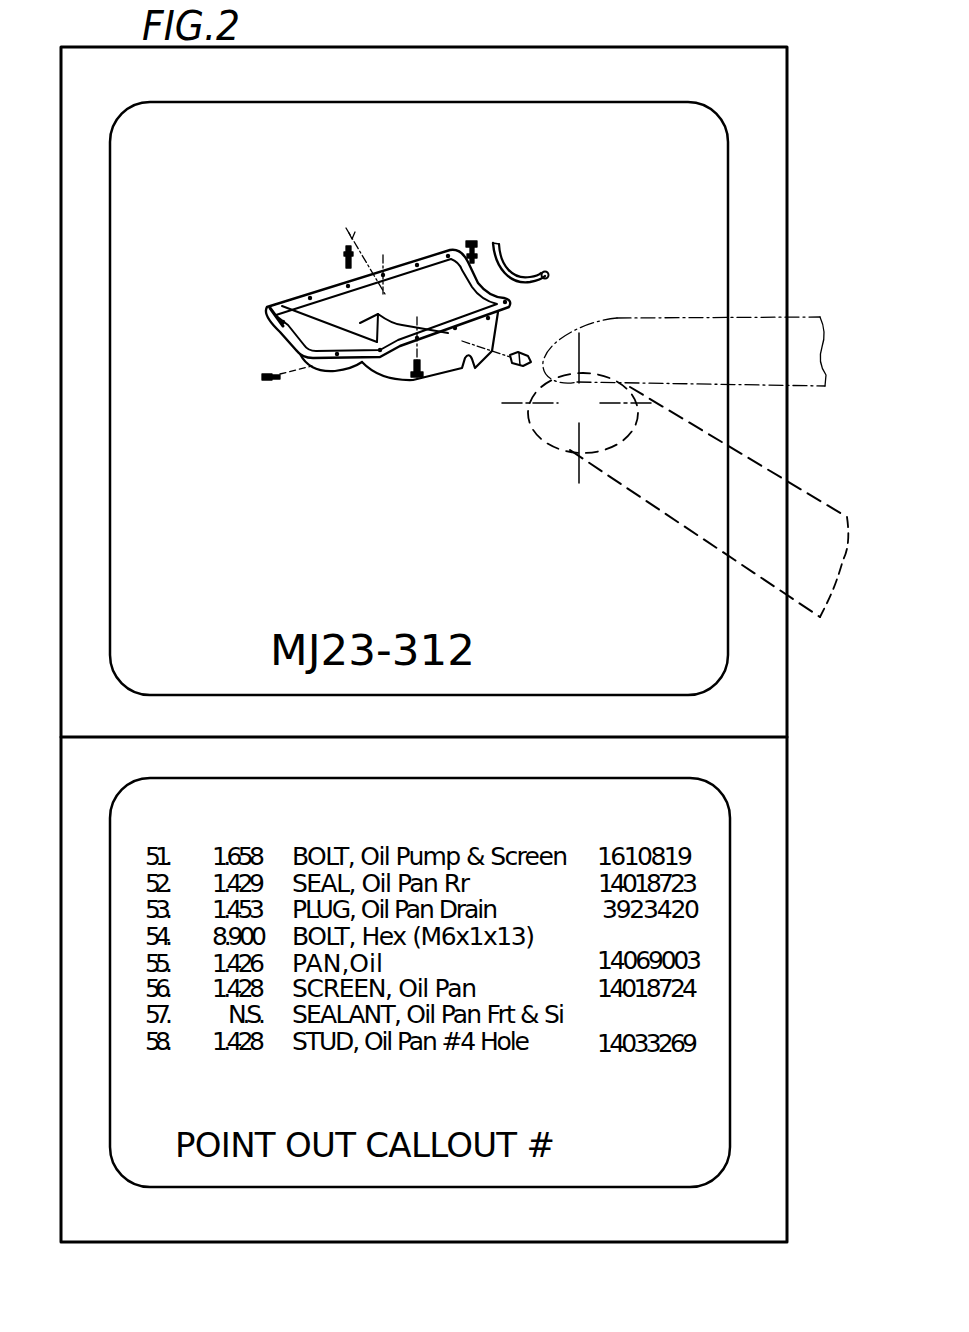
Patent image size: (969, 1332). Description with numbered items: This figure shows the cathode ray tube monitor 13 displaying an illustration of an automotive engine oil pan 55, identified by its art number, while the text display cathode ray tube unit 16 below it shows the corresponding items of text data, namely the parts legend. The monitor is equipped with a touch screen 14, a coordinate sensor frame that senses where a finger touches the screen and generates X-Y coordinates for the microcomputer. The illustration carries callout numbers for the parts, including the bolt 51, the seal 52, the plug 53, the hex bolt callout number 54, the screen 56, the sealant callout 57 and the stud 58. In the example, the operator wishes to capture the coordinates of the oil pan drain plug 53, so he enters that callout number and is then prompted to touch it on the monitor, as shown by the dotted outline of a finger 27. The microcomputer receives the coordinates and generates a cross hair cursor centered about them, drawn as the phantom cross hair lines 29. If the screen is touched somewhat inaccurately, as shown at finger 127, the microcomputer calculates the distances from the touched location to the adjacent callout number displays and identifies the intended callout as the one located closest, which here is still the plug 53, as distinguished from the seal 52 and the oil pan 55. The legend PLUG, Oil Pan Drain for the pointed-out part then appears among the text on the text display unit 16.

The cathode ray tube monitor 13 is at (714, 219).
The touch screen 14 is at (78, 479).
The text display cathode ray tube unit 16 is at (715, 1082).
The finger 27 is at (680, 405).
The cross hair lines 29 is at (577, 464).
The bolt 51 is at (482, 238).
The seal 52 is at (556, 276).
The plug 53 is at (537, 369).
The callout number 54 is at (411, 378).
The oil pan 55 is at (339, 366).
The screen 56 is at (266, 384).
The sealant, oil pan front and sides 57 is at (284, 311).
The stud 58 is at (343, 257).
The finger 127 is at (617, 318).